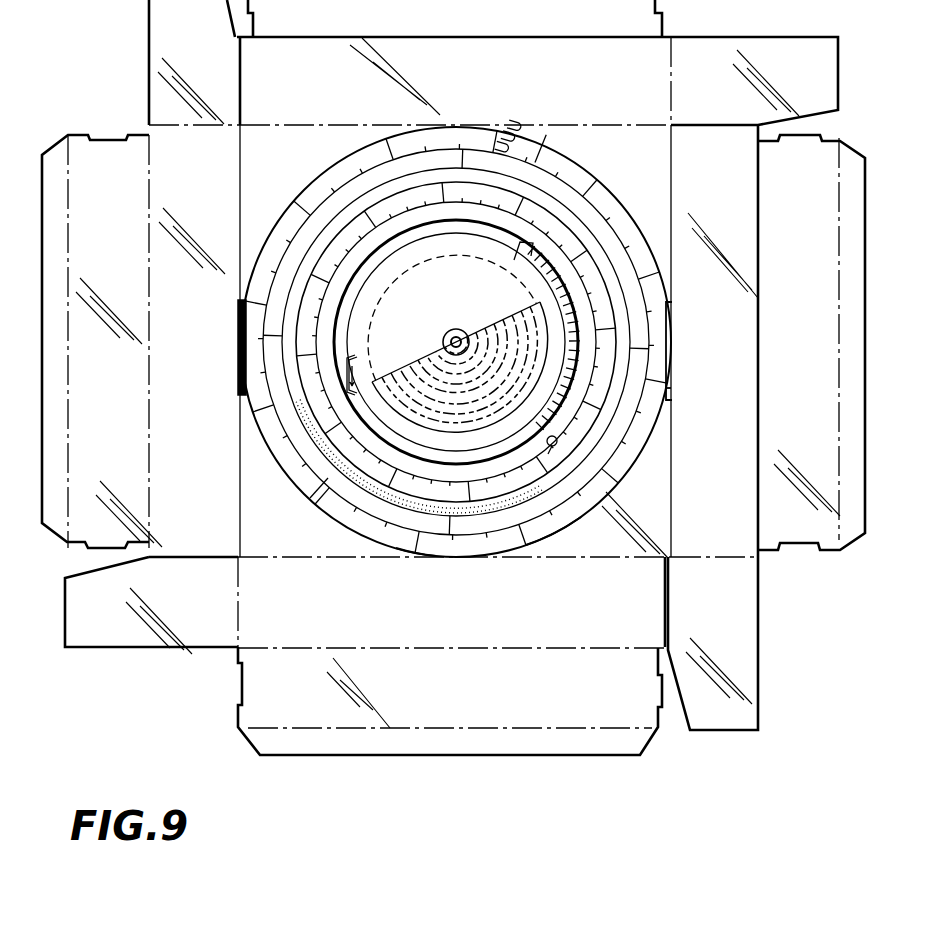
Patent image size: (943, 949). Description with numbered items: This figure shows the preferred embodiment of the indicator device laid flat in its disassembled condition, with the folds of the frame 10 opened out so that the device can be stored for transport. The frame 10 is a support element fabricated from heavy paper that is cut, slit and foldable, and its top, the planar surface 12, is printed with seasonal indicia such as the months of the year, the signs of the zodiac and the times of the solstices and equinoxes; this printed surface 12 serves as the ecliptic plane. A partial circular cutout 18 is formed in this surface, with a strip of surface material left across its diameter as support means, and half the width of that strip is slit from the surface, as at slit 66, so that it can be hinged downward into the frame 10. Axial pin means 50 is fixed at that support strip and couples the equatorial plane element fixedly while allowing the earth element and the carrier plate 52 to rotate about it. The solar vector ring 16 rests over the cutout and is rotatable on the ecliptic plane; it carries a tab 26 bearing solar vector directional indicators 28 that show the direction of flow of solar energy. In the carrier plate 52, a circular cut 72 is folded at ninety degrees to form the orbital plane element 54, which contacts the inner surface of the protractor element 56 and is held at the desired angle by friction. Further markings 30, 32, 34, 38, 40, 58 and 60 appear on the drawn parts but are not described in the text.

The frame 10 is at (256, 628).
The planar surface 12 is at (280, 541).
The solar vector ring 16 is at (456, 342).
The partial circular cutout 18 is at (600, 470).
The tab 26 is at (550, 122).
The solar vector directional indicators 28 is at (578, 154).
The season ring 30 is at (449, 342).
The side tab 32 is at (695, 392).
The lower ring segment 34 is at (412, 564).
The lower ring segment 38 is at (553, 559).
The equinox ring 40 is at (493, 342).
The axial pin means 50 is at (460, 323).
The carrier plate 52 is at (331, 521).
The orbital plane element 54 is at (452, 309).
The protractor element 56 is at (456, 348).
The inclination scale 58 is at (521, 342).
The month ring 60 is at (503, 342).
The slit 66 is at (458, 350).
The cut 72 is at (368, 389).